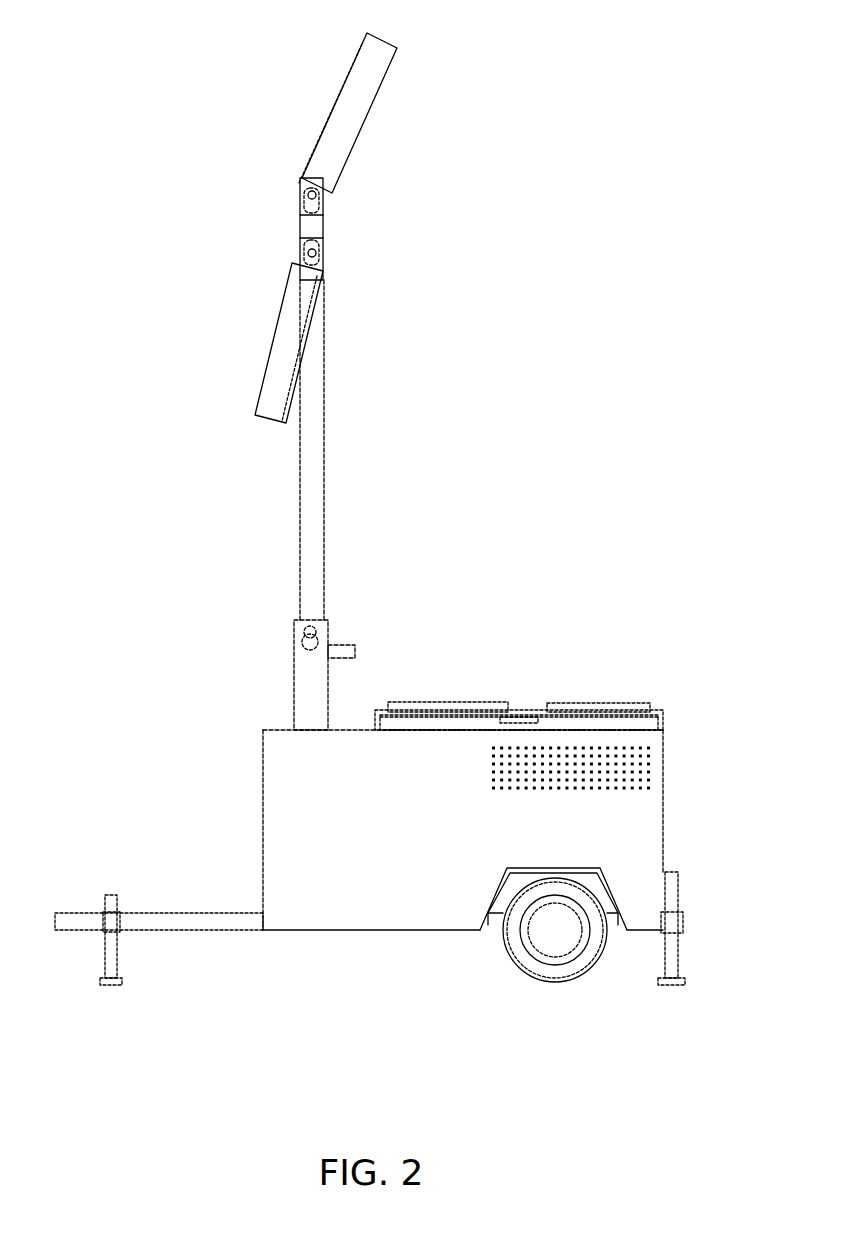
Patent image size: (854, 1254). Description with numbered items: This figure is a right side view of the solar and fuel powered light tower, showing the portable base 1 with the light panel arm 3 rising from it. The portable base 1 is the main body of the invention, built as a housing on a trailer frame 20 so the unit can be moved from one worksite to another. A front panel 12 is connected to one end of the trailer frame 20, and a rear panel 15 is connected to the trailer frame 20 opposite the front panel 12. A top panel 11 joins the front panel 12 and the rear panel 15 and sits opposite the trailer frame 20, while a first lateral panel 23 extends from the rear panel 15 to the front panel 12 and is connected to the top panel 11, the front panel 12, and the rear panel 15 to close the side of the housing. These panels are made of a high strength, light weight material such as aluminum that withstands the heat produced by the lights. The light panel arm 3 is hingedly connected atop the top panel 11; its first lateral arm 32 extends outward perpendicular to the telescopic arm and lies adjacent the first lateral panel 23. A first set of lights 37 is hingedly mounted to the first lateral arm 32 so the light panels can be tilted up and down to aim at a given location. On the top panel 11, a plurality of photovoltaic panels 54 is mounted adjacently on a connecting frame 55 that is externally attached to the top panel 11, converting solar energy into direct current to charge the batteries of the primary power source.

The portable base 1 is at (517, 637).
The light panel arm 3 is at (337, 458).
The top panel 11 is at (278, 728).
The front panel 12 is at (263, 840).
The rear panel 15 is at (663, 757).
The trailer frame 20 is at (493, 925).
The first lateral panel 23 is at (397, 842).
The first lateral arm 32 is at (320, 223).
The first set of lights 37 is at (385, 47).
The plurality of photovoltaic panels 54 is at (425, 702).
The connecting frame 55 is at (663, 710).